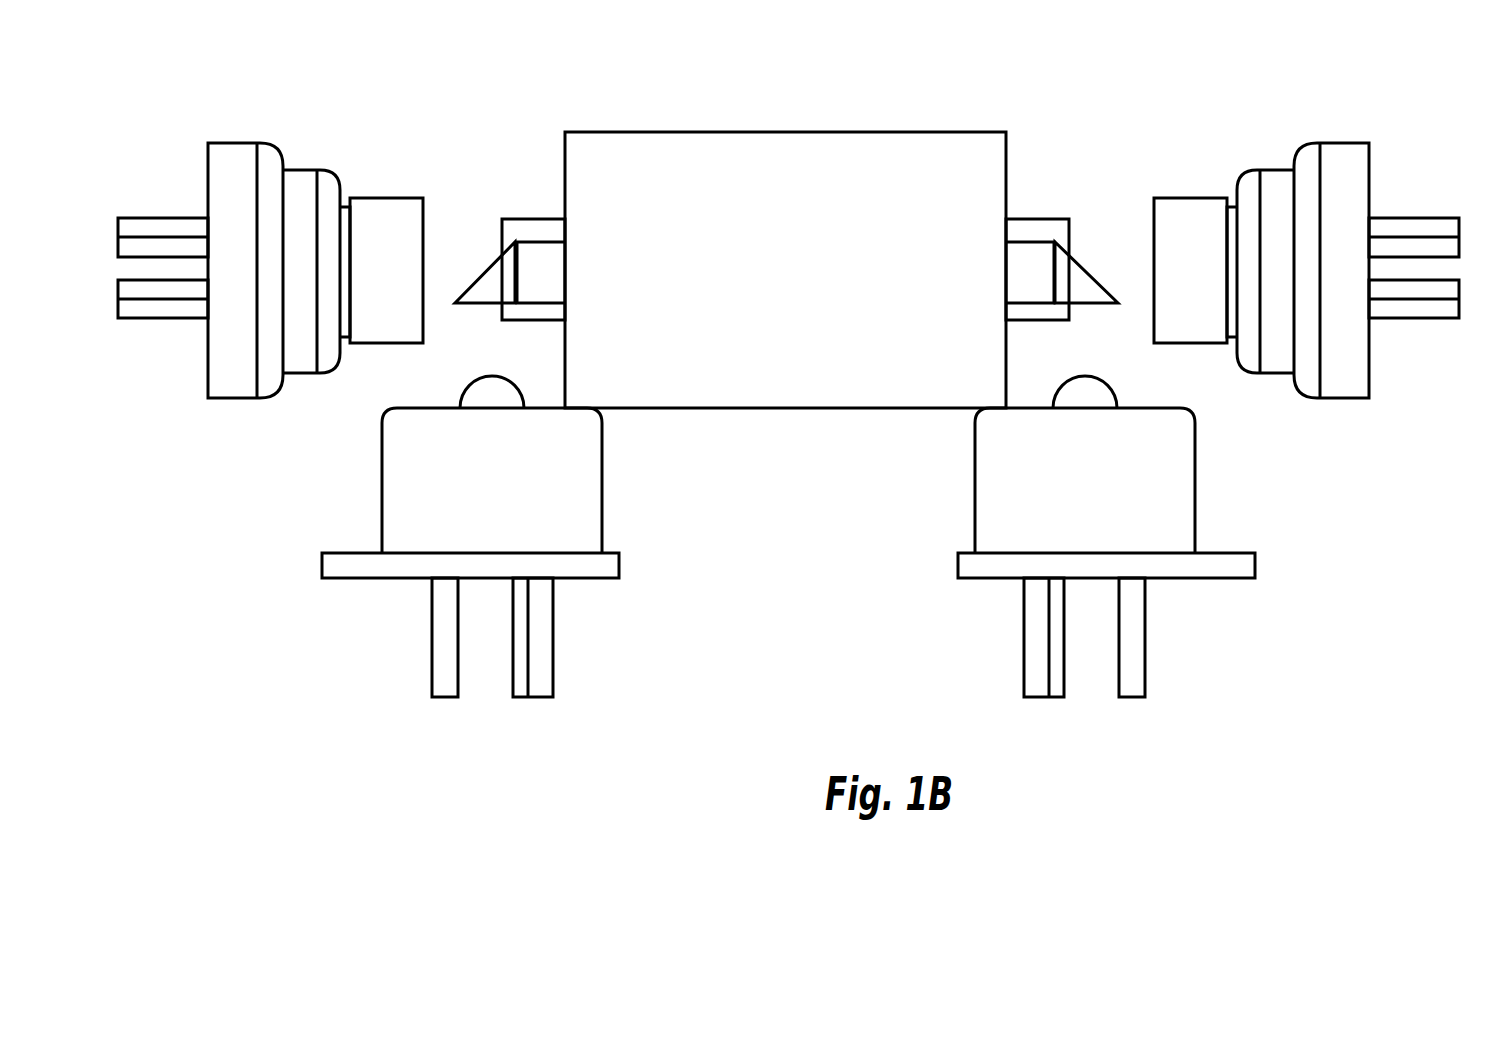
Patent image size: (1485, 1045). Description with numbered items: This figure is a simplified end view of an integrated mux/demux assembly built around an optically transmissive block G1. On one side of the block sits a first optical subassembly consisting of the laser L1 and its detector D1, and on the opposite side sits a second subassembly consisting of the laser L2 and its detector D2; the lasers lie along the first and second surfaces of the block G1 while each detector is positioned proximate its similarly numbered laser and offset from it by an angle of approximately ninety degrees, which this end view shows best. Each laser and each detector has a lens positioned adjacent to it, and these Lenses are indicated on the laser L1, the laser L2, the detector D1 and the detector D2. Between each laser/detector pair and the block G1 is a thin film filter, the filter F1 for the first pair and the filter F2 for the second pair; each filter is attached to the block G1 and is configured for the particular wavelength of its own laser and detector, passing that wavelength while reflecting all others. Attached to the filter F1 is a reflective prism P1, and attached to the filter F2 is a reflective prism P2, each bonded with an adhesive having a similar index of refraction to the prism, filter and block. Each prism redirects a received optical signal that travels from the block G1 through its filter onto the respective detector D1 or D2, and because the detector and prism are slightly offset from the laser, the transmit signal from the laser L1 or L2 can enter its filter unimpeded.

The optically transmissive block G1 is at (780, 148).
The laser L1 is at (233, 162).
The laser L2 is at (1341, 153).
The filter F1 is at (537, 257).
The filter F2 is at (1027, 257).
The reflective prism P1 is at (493, 283).
The reflective prism P2 is at (1074, 274).
The detector D1 is at (398, 488).
The detector D2 is at (995, 488).
The lenses Lenses is at (477, 396).